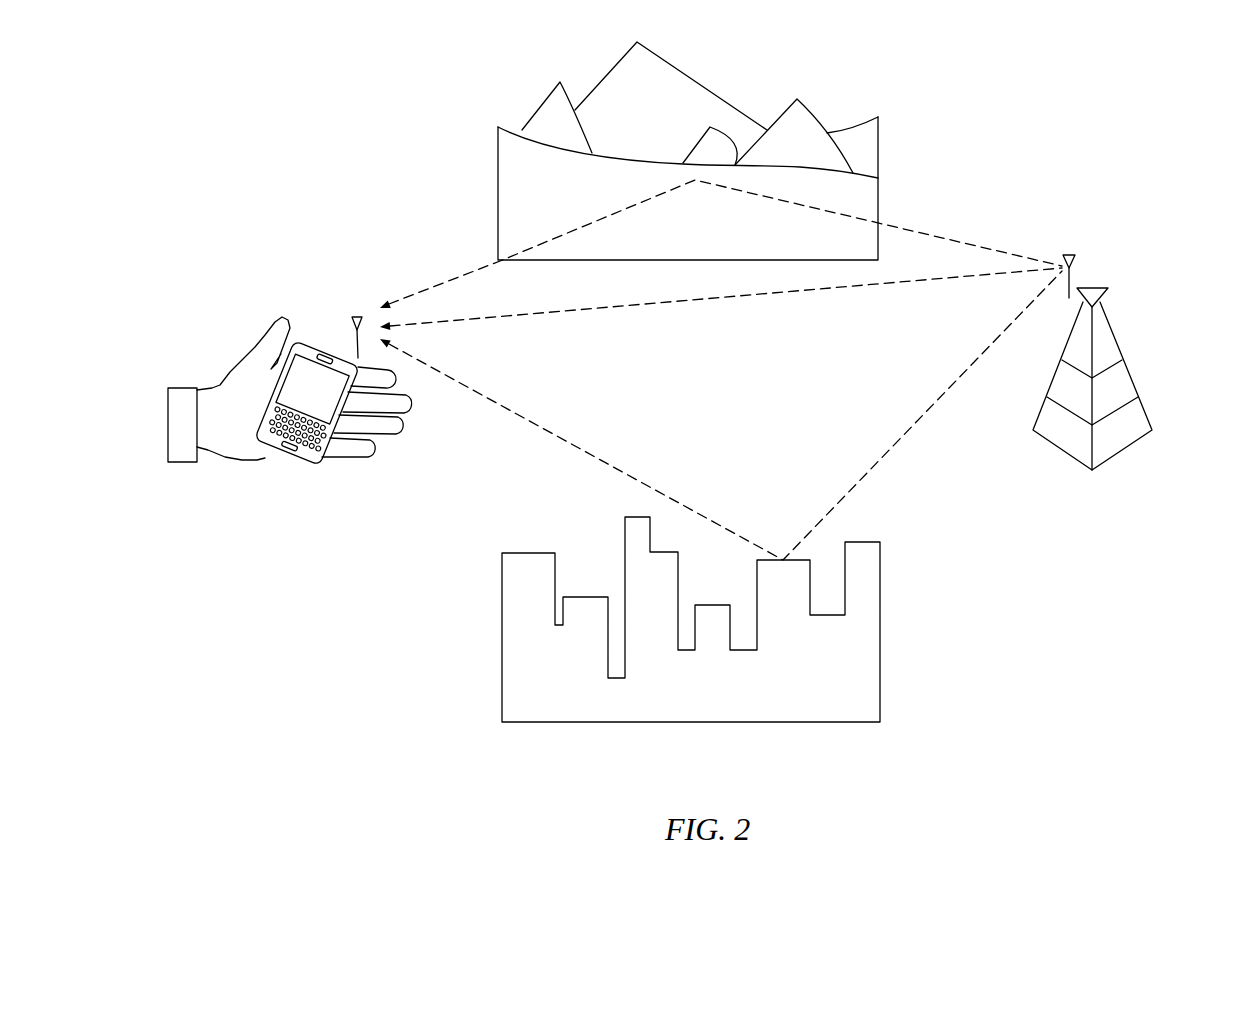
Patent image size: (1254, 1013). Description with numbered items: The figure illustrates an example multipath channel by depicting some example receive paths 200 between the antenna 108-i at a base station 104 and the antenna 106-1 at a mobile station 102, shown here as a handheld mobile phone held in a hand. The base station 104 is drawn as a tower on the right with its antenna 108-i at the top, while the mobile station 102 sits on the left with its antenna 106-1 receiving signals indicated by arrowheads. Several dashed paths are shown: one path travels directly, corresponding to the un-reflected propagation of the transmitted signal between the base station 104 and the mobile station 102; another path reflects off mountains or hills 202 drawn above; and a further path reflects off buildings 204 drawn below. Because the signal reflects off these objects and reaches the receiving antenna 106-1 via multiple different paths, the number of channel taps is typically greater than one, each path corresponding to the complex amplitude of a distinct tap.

The receive paths 200 is at (245, 708).
The mobile station 102 is at (300, 463).
The antenna 106-1 is at (347, 322).
The base station 104 is at (1152, 407).
The antenna 108-i is at (1078, 263).
The mountains or hills 202 is at (498, 207).
The buildings 204 is at (880, 673).